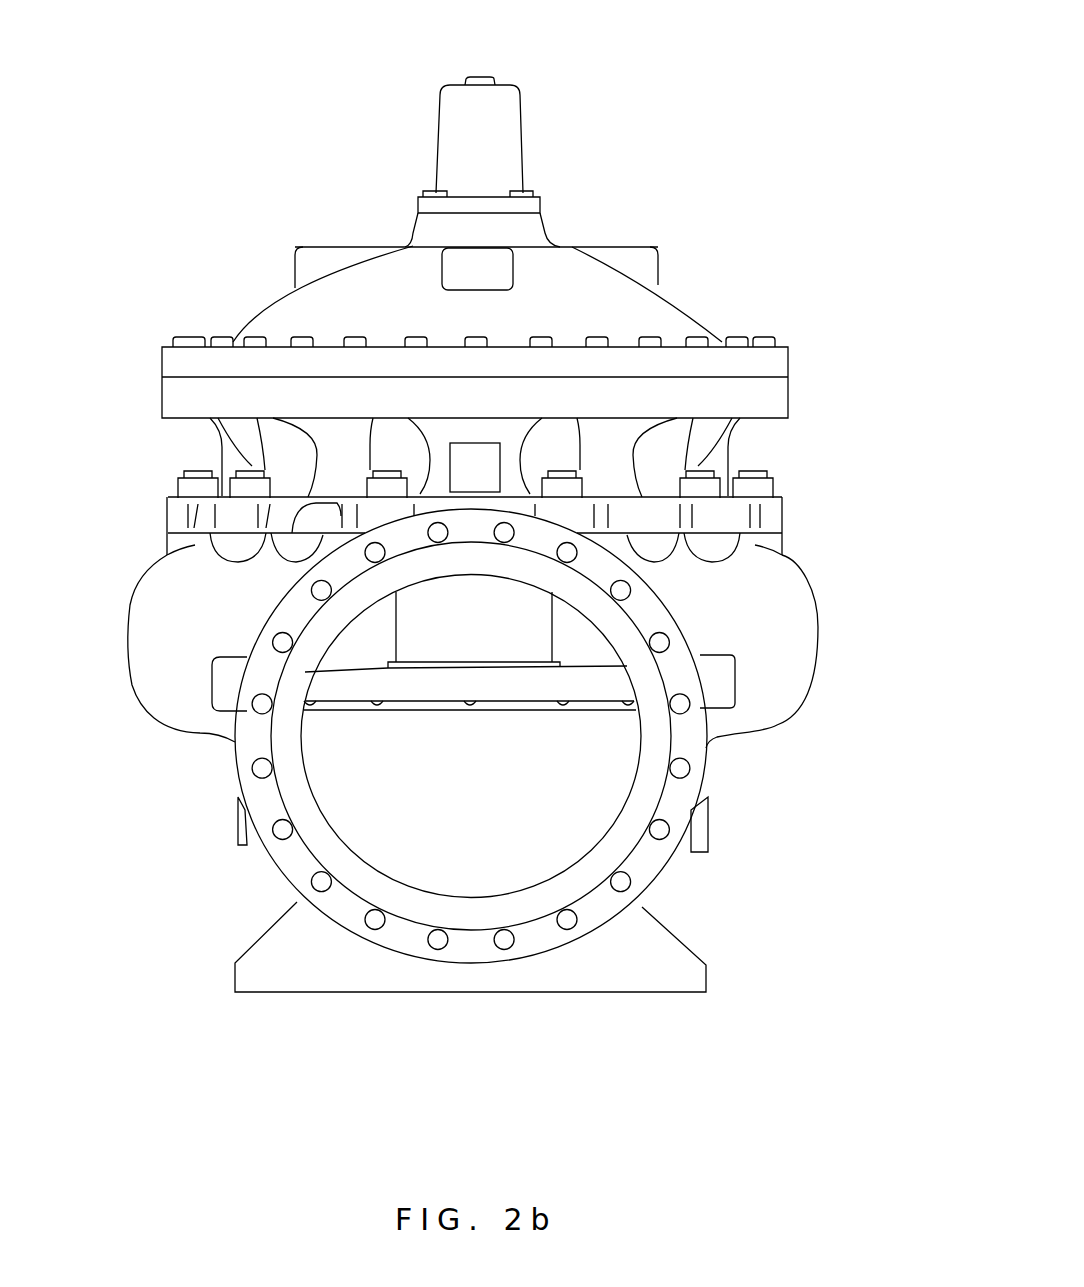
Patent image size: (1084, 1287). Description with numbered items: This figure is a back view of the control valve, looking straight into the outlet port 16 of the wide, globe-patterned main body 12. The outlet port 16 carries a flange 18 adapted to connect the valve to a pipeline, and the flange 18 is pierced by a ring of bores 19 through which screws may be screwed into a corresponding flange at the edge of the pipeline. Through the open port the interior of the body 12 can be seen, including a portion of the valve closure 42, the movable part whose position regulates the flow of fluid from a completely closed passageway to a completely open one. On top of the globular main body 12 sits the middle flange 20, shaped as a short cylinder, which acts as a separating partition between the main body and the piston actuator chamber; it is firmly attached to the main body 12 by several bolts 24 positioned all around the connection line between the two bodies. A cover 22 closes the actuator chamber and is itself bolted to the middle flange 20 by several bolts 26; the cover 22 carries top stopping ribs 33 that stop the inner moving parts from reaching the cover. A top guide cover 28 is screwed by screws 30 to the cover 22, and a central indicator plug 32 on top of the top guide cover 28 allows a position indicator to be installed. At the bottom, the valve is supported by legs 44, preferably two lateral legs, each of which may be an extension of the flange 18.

The main body 12 is at (763, 648).
The outlet port 16 is at (465, 757).
The flange 18 is at (680, 802).
The bores 19 is at (262, 769).
The middle flange 20 is at (642, 443).
The cover 22 is at (577, 310).
The bolts 24 is at (600, 490).
The bolts 26 is at (610, 338).
The top guide cover 28 is at (507, 147).
The screws 30 is at (479, 195).
The central indicator plug 32 is at (485, 73).
The top stopping ribs 33 is at (630, 257).
The valve closure 42 is at (350, 687).
The legs 44 is at (317, 969).